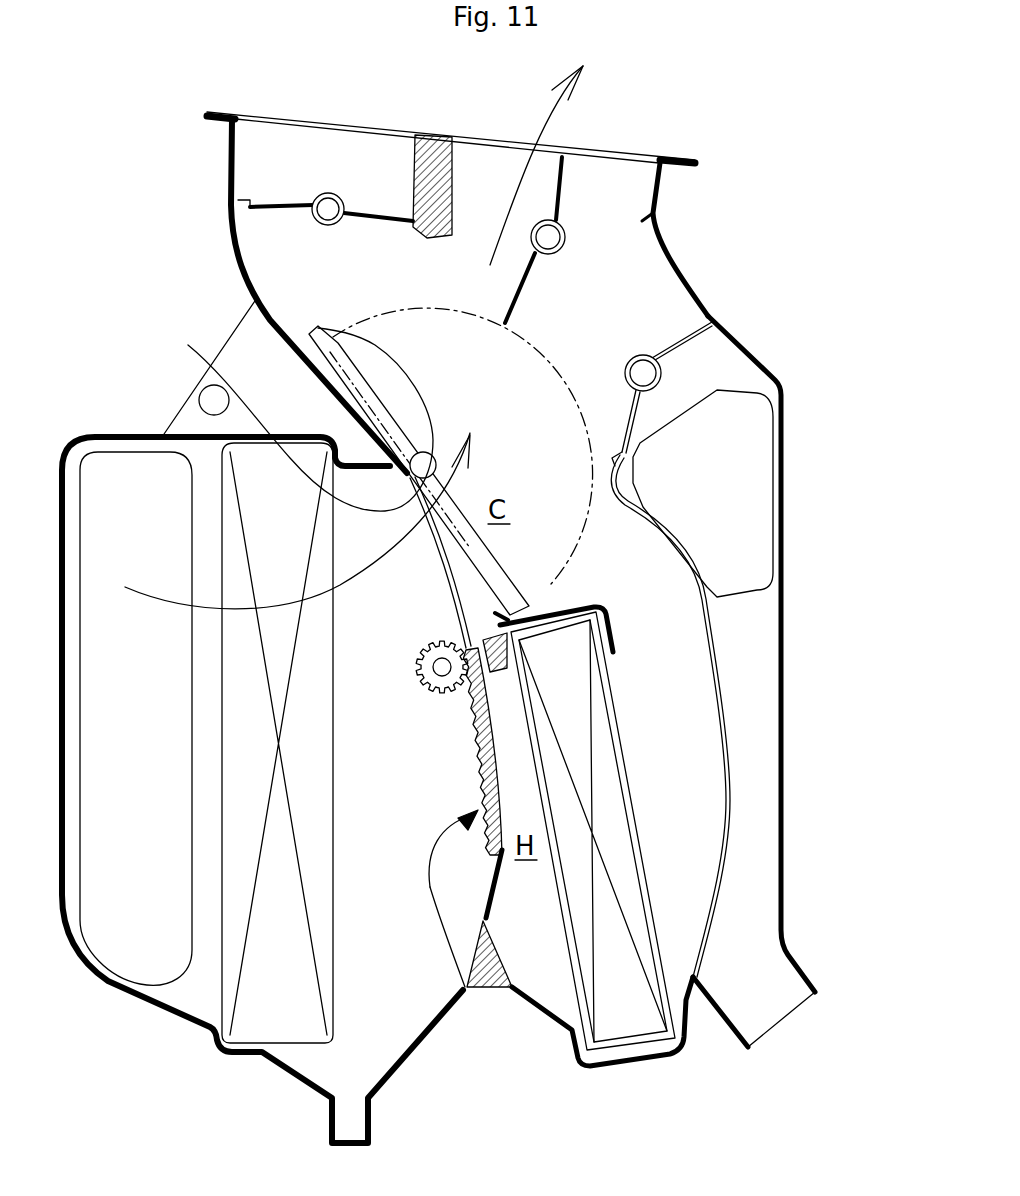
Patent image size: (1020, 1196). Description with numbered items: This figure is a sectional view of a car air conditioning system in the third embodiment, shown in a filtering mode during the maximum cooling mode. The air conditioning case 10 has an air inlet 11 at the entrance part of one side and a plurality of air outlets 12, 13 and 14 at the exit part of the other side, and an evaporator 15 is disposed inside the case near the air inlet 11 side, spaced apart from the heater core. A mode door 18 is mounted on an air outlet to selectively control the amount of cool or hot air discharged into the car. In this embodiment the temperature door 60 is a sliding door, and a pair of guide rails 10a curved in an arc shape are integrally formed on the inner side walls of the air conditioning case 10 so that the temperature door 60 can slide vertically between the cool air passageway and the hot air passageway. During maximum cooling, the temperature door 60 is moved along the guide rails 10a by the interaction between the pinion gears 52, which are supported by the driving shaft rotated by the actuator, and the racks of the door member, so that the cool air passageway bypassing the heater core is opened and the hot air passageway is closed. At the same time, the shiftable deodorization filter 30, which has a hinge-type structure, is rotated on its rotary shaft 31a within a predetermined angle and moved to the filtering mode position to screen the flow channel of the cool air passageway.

The air conditioning case 10 is at (110, 428).
The guide rails 10a is at (291, 415).
The air inlet 11 is at (133, 937).
The air outlet 12 is at (320, 130).
The air outlet 13 is at (610, 166).
The air outlet 14 is at (757, 998).
The evaporator 15 is at (260, 1005).
The mode door 18 is at (625, 1025).
The shiftable deodorization filter 30 is at (507, 565).
The rotary shaft 31a is at (335, 347).
The pinion gears 52 is at (437, 692).
The temperature door 60 is at (479, 990).